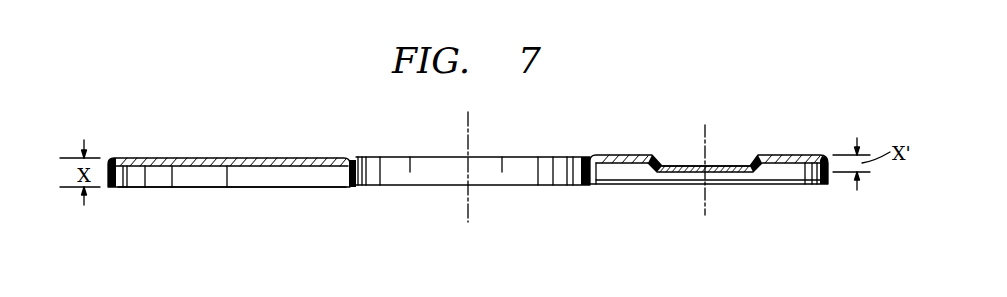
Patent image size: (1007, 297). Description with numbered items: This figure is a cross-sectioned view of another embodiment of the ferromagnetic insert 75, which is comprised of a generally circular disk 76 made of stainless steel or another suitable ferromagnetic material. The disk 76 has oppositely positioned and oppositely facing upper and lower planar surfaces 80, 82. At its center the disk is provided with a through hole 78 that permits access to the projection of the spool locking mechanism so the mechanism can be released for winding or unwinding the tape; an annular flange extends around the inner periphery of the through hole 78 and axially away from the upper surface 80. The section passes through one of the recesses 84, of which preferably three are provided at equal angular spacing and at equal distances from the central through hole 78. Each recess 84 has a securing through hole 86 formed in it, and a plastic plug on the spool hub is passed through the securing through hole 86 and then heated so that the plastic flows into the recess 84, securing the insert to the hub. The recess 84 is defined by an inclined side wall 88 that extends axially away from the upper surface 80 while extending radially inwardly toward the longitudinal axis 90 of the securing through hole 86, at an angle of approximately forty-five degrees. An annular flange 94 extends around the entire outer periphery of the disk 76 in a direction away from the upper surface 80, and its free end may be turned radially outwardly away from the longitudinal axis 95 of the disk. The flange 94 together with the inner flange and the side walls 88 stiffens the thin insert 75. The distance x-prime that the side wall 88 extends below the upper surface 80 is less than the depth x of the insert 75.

The ferromagnetic insert 75 is at (712, 173).
The circular disk 76 is at (607, 155).
The through hole 78 is at (360, 174).
The upper planar surface 80 is at (207, 158).
The lower planar surface 82 is at (188, 167).
The recess 84 is at (663, 157).
The securing through hole 86 is at (725, 173).
The inclined side wall 88 is at (657, 170).
The longitudinal axis 90 is at (707, 202).
The annular flange 94 is at (808, 182).
The longitudinal axis of the disk 95 is at (468, 122).